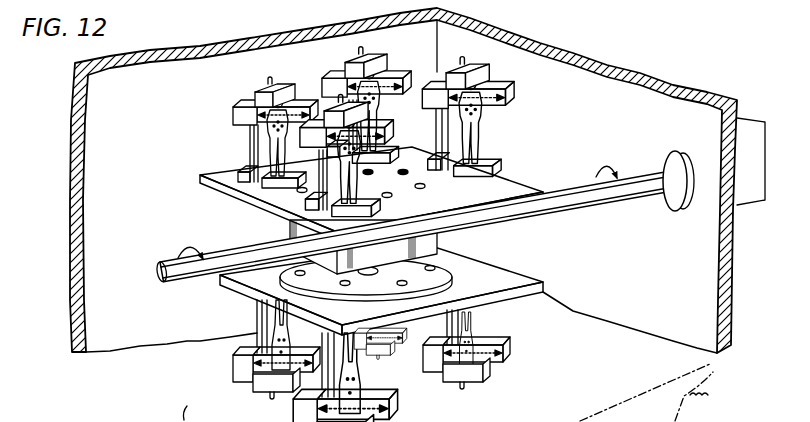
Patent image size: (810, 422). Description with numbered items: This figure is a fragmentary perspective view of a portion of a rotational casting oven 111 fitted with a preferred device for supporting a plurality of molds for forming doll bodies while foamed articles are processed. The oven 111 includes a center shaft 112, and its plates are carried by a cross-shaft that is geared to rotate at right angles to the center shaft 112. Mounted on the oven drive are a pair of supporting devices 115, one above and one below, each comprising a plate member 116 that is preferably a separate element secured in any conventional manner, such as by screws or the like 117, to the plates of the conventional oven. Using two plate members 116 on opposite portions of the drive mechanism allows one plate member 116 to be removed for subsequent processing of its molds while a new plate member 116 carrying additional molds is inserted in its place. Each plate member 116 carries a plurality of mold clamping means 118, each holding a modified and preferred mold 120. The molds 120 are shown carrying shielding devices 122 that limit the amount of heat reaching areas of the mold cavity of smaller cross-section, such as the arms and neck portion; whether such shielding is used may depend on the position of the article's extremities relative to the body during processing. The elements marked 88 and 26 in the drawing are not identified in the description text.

The rotational casting oven 111 is at (607, 60).
The center shaft 112 is at (641, 193).
The supporting device 115 is at (518, 153).
The plate member 116 is at (503, 200).
The screws 117 is at (405, 168).
The mold clamping means 118 is at (233, 168).
The mold 120 is at (248, 137).
The shielding device 122 is at (295, 97).
The adjacent element 88 is at (196, 412).
The adjacent element 26 is at (661, 393).